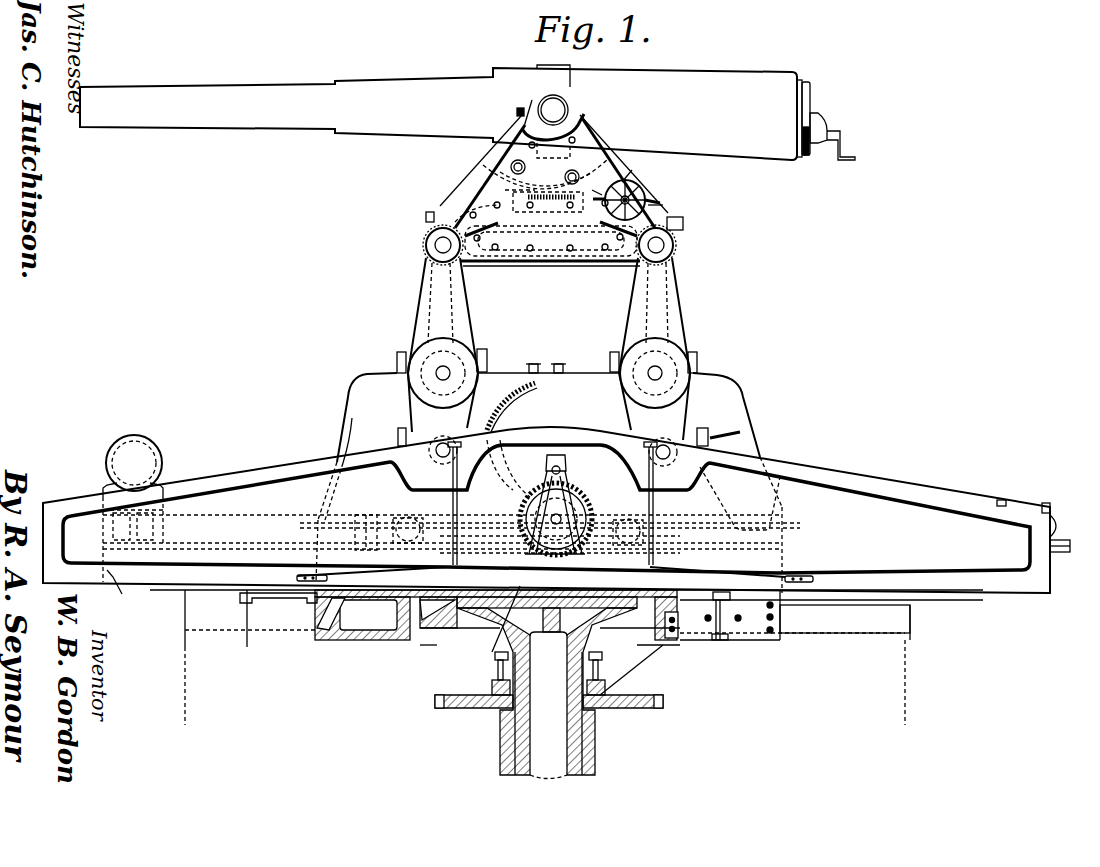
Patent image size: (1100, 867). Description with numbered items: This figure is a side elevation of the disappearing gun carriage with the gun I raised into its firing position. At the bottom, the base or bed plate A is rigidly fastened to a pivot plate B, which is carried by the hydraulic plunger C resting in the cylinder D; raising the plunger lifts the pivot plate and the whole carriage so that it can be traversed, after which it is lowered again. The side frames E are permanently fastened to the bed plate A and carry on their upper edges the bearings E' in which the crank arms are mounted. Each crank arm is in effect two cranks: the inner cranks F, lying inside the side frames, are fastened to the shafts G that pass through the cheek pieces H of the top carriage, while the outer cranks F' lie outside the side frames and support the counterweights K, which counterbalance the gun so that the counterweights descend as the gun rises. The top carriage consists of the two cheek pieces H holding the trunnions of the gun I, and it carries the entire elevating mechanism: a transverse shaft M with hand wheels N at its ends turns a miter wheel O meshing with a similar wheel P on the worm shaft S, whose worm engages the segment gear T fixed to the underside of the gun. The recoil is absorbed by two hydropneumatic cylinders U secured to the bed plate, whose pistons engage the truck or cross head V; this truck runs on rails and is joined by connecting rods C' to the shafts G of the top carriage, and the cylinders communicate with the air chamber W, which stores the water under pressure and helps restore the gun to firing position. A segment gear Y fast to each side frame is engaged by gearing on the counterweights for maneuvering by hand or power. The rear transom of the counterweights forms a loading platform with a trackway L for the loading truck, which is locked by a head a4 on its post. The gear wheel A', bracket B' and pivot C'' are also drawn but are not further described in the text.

The gun I is at (467, 147).
The cheek pieces H is at (587, 268).
The worm shaft S is at (550, 205).
The segment gear T is at (520, 184).
The hand wheels N is at (640, 182).
The shaft M is at (667, 204).
The miter wheel P is at (596, 185).
The miter wheel O is at (635, 168).
The shafts G is at (440, 245).
The crank arms F is at (549, 349).
The bearings E' is at (547, 373).
The outer cranks F' is at (549, 464).
The side frames E is at (547, 483).
The segment gear Y is at (515, 405).
The pivot C'' is at (623, 413).
The counterweights K is at (546, 510).
The hydropneumatic cylinders U is at (227, 516).
The base or bed plate A is at (459, 554).
The air chamber W is at (160, 457).
The connecting rod C' is at (531, 465).
The truck or cross head V is at (480, 523).
The gear wheel A' is at (568, 518).
The bracket B' is at (561, 504).
The latch a4 is at (1046, 503).
The trackway L is at (1060, 559).
The pivot plate B is at (584, 655).
The cylinder D is at (502, 745).
The hydraulic plunger C is at (596, 691).